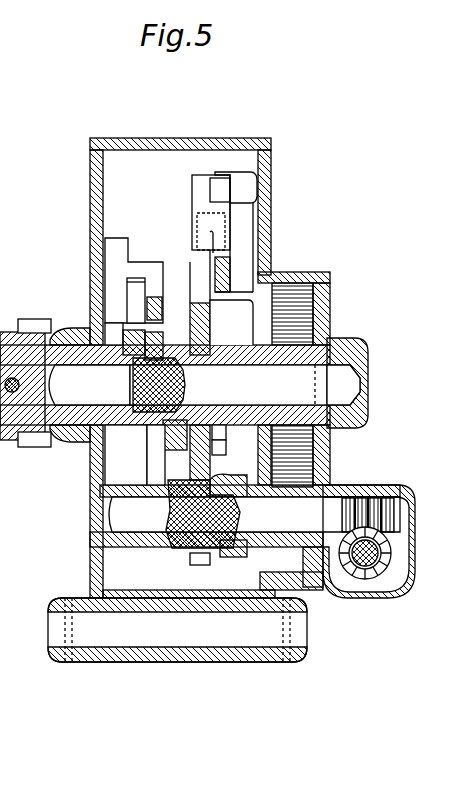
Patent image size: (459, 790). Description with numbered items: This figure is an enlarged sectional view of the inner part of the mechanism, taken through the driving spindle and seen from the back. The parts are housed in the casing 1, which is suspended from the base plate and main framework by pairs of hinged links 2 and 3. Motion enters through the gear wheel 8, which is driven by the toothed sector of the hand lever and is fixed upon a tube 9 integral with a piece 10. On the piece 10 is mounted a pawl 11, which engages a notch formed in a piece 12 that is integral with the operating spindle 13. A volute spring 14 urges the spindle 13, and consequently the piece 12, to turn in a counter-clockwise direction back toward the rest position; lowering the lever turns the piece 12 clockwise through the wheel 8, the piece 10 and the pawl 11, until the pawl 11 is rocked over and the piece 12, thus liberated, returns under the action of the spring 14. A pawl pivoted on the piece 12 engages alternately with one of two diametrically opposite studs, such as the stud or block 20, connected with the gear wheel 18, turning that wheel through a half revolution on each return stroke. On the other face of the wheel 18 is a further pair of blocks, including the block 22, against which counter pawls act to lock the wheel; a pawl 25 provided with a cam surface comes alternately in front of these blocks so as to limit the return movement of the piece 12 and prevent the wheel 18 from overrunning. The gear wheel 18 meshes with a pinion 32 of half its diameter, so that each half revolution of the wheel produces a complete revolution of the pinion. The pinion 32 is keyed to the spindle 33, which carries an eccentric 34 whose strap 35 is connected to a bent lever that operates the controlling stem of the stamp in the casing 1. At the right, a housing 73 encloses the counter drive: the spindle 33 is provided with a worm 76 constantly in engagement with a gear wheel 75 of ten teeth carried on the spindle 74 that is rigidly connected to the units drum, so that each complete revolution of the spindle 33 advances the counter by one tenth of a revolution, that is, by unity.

The casing 1 is at (272, 212).
The hinged link 2 is at (352, 340).
The hinged link 3 is at (62, 604).
The gear wheel 8 is at (18, 325).
The tube 9 is at (96, 368).
The piece 10 is at (133, 303).
The pawl 11 is at (162, 276).
The piece 12 is at (190, 348).
The operating spindle 13 is at (245, 385).
The volute spring 14 is at (292, 295).
The gear wheel 18 is at (207, 318).
The stud or block 20 is at (185, 432).
The stud or block 22 is at (219, 431).
The pawl 25 is at (224, 232).
The pinion 32 is at (190, 558).
The spindle 33 is at (254, 514).
The eccentric 34 is at (232, 558).
The strap 35 is at (231, 476).
The worm housing 73 is at (408, 494).
The spindle 74 is at (372, 553).
The gear wheel 75 is at (385, 572).
The worm 76 is at (388, 518).